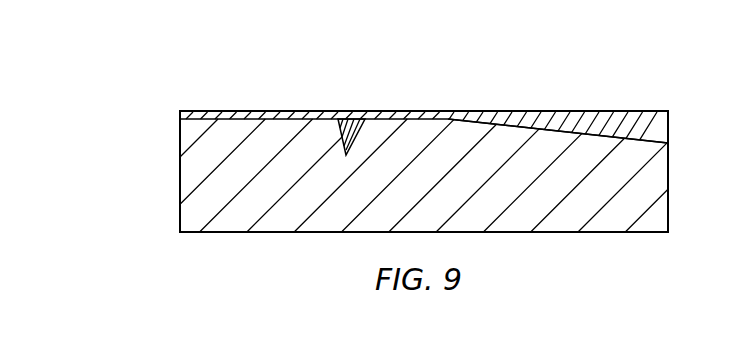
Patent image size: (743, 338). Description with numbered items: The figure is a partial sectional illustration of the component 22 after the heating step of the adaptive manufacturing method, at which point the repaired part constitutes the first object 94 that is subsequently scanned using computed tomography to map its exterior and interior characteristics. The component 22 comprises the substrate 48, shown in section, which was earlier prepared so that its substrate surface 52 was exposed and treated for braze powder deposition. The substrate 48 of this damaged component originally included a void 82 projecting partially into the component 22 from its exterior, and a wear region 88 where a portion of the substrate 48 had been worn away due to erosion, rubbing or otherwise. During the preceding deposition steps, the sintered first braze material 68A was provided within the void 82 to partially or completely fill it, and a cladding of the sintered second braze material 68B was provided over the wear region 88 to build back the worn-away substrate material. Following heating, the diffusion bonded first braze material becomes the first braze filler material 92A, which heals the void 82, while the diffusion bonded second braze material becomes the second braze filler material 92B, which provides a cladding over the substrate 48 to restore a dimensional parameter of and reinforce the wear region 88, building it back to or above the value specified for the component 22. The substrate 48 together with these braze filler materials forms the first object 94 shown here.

The component 22 is at (155, 103).
The substrate 48 is at (180, 185).
The substrate surface 52 is at (258, 119).
The sintered first braze material 68A is at (313, 81).
The first braze filler material 92A is at (349, 119).
The sintered second braze material 68B is at (558, 87).
The second braze filler material 92B is at (544, 118).
The void 82 is at (358, 132).
The wear region 88 is at (581, 144).
The first object 94 is at (663, 80).